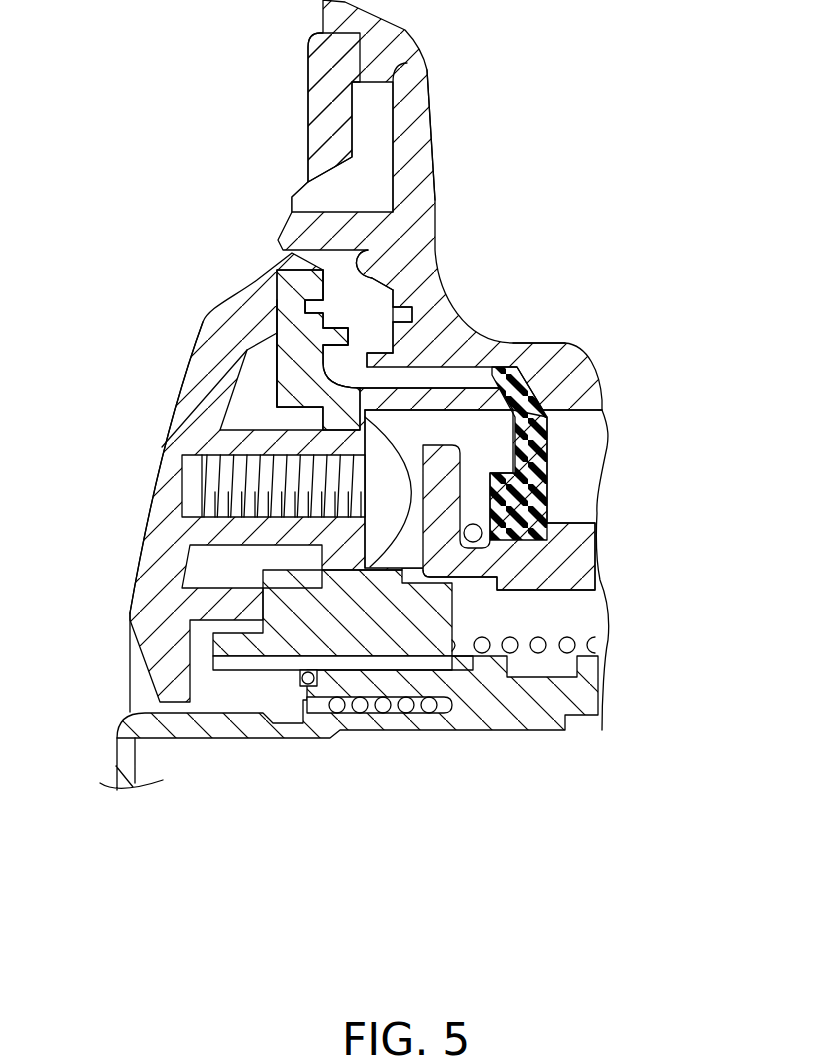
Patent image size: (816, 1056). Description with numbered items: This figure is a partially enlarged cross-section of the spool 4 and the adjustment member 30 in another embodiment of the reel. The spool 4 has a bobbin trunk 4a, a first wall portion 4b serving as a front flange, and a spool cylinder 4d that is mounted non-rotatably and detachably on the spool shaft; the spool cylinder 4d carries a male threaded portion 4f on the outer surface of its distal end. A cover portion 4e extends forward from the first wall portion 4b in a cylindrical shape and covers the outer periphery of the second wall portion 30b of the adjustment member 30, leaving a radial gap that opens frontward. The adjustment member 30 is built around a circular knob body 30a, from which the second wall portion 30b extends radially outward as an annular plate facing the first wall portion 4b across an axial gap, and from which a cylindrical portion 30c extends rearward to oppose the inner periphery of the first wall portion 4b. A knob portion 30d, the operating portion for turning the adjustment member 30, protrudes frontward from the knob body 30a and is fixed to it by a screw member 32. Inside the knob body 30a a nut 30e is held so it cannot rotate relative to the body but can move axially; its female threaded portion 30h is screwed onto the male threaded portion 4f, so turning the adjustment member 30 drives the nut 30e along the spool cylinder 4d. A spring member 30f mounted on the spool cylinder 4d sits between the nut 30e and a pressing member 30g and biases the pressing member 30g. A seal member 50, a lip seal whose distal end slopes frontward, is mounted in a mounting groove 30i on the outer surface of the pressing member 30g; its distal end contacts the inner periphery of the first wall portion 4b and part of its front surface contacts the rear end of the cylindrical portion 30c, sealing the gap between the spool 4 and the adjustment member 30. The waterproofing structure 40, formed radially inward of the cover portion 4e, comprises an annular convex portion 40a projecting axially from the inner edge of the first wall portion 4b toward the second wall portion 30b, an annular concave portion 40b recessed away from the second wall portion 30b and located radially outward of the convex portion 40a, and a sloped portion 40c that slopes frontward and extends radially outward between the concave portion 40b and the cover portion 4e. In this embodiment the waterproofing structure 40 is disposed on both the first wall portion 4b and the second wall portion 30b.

The spool 4 is at (443, 176).
The bobbin trunk 4a is at (577, 390).
The first wall portion 4b is at (412, 137).
The spool cylinder 4d is at (583, 698).
The cover portion 4e is at (307, 217).
The male threaded portion 4f is at (392, 672).
The adjustment member 30 is at (150, 469).
The knob body 30a is at (345, 423).
The second wall portion 30b is at (300, 348).
The cylindrical portion 30c is at (463, 400).
The knob portion 30d is at (153, 553).
The nut 30e is at (278, 635).
The spring member 30f is at (540, 654).
The pressing member 30g is at (573, 565).
The female threaded portion 30h is at (353, 671).
The mounting groove 30i is at (540, 520).
The screw member 32 is at (388, 475).
The waterproofing structure 40 is at (653, 113).
The annular convex portion 40a is at (400, 345).
The annular concave portion 40b is at (412, 313).
The sloped portion 40c is at (377, 266).
The seal member 50 is at (538, 438).